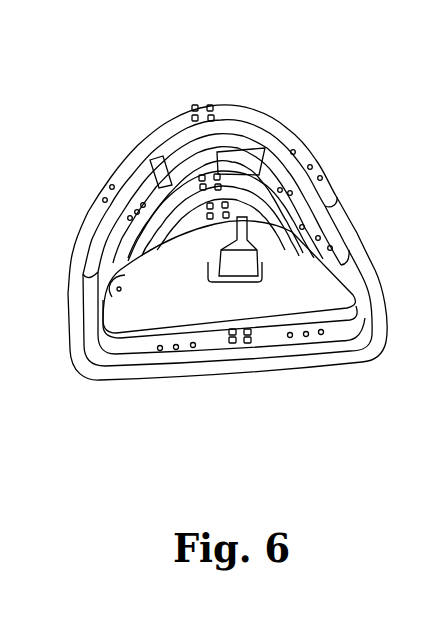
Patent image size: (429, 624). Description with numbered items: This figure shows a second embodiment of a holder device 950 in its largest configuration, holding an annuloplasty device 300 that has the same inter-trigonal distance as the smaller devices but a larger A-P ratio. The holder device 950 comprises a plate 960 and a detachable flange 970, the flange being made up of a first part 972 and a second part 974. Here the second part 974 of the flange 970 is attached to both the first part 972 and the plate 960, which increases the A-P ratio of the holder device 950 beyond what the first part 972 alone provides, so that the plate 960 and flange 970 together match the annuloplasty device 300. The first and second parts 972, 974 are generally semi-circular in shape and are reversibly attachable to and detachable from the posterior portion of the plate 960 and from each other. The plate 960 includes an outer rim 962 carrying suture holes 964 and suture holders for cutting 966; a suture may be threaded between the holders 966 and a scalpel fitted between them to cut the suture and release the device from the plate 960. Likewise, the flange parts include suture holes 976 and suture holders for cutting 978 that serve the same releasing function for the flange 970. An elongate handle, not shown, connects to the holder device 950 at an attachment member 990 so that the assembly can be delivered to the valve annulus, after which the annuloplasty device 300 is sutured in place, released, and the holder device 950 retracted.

The annuloplasty device 300 is at (80, 370).
The holder device 950 is at (160, 418).
The plate 960 is at (138, 315).
The outer rim 962 is at (90, 330).
The suture holes 964 is at (110, 282).
The suture holders for cutting 966 is at (248, 344).
The detachable flange 970 is at (62, 120).
The first part 972 is at (300, 196).
The second part 974 is at (163, 120).
The suture holes 976 is at (140, 200).
The suture holders for cutting 978 is at (220, 173).
The attachment member 990 is at (240, 267).